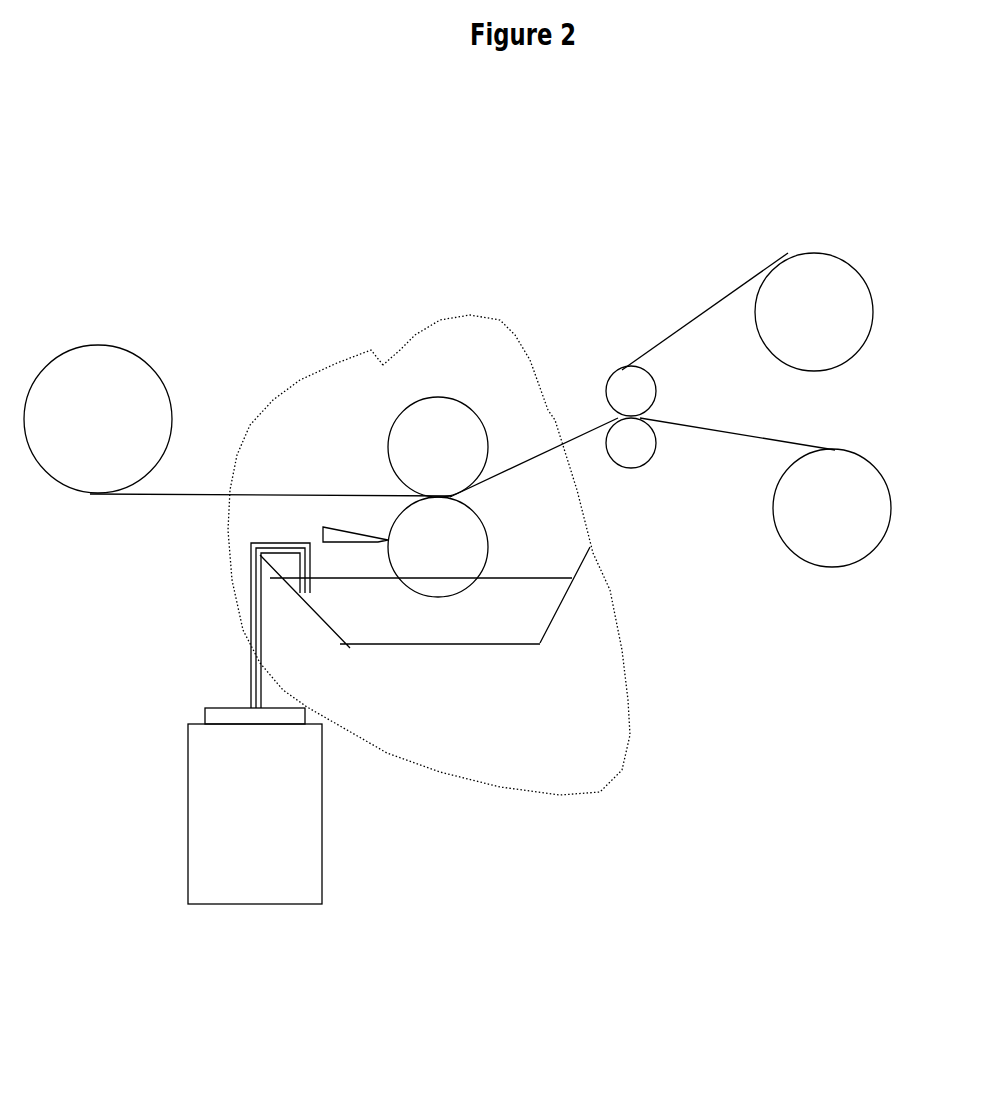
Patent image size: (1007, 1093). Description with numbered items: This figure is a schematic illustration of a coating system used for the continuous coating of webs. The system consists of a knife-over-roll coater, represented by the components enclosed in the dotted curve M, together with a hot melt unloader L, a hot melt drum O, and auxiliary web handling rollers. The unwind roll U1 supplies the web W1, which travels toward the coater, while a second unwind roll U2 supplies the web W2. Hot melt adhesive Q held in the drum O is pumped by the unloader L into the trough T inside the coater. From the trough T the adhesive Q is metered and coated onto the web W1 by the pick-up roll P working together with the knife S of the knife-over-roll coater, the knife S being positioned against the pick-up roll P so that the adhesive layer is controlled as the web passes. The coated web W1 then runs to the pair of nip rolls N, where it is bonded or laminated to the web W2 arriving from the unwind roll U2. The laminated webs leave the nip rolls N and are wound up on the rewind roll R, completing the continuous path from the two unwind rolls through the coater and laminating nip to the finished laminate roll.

The unwind roll U1 is at (123, 397).
The web W1 is at (185, 498).
The knife S is at (342, 527).
The pick-up roll P is at (458, 547).
The nip rolls N is at (617, 430).
The web W2 is at (672, 318).
The unwind roll U2 is at (822, 303).
The rewind roll R is at (820, 518).
The hot melt adhesive Q is at (492, 613).
The trough T is at (455, 645).
The hot melt unloader L is at (237, 705).
The hot melt drum O is at (272, 822).
The knife-over-roll coater M is at (473, 788).